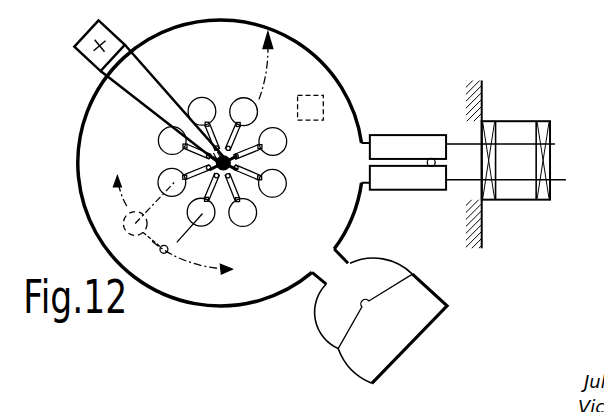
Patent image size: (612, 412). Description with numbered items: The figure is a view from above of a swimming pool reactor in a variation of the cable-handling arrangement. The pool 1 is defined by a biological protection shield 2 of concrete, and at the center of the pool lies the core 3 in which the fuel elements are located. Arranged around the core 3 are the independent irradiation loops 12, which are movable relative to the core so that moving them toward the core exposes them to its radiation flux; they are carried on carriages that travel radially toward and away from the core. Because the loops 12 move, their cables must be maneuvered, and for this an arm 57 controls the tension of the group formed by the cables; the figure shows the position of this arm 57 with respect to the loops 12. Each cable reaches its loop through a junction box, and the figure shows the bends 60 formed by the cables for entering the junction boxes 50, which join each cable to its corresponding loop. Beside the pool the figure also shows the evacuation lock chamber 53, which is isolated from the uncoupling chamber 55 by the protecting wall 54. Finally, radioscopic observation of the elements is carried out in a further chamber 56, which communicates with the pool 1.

The pool 1 is at (288, 87).
The biological protection shield 2 is at (341, 80).
The core 3 is at (250, 154).
The independent irradiation loops 12 is at (237, 105).
The junction boxes 50 is at (192, 153).
The evacuation lock chamber 53 is at (468, 162).
The protecting wall 54 is at (477, 110).
The uncoupling chamber 55 is at (517, 128).
The chamber 56 is at (386, 335).
The arm 57 is at (123, 86).
The bends 60 is at (245, 187).